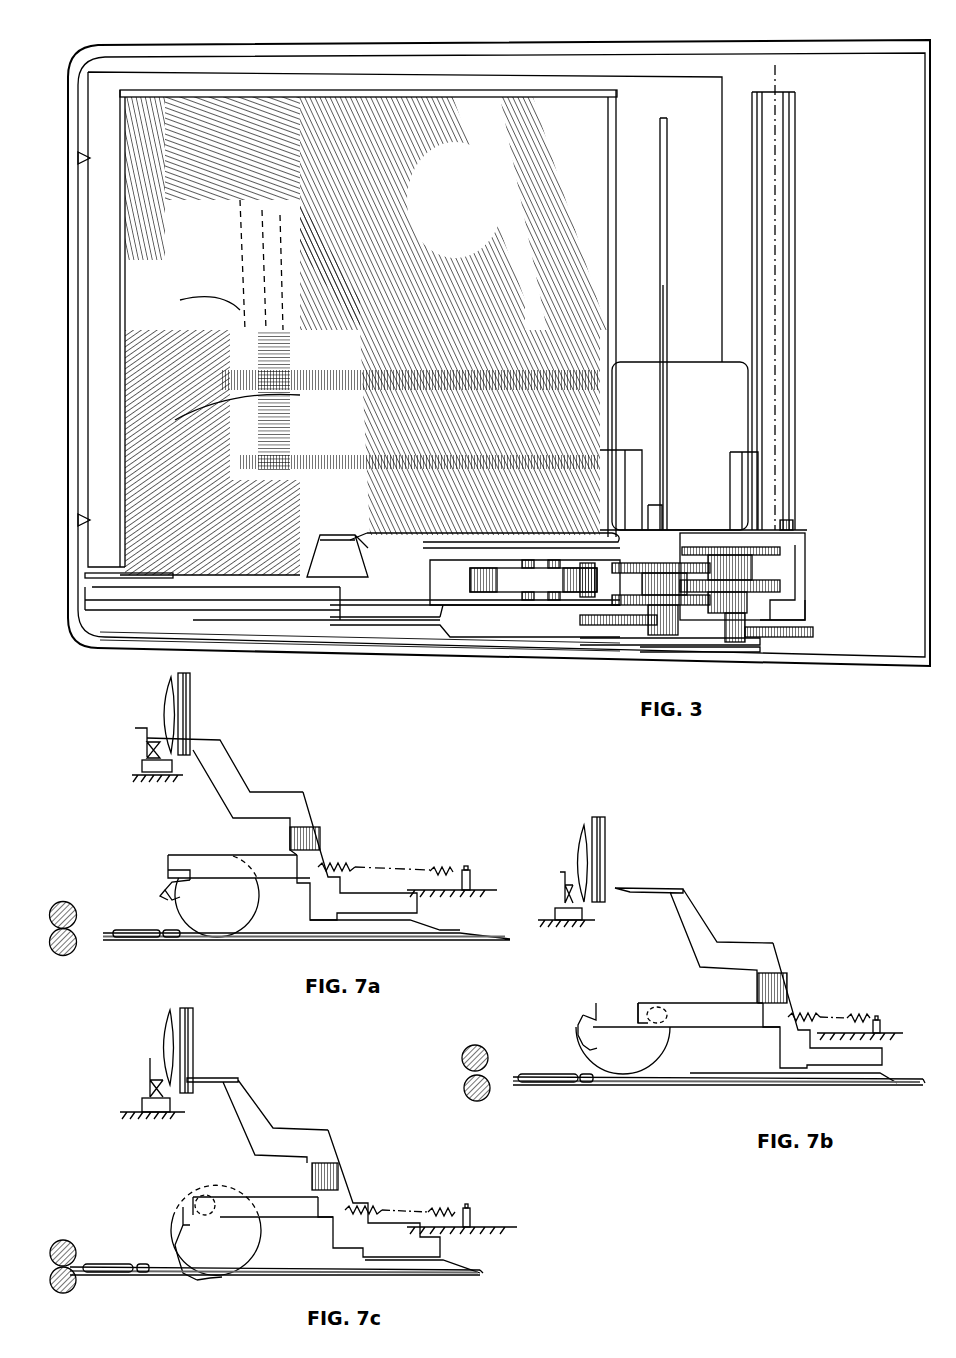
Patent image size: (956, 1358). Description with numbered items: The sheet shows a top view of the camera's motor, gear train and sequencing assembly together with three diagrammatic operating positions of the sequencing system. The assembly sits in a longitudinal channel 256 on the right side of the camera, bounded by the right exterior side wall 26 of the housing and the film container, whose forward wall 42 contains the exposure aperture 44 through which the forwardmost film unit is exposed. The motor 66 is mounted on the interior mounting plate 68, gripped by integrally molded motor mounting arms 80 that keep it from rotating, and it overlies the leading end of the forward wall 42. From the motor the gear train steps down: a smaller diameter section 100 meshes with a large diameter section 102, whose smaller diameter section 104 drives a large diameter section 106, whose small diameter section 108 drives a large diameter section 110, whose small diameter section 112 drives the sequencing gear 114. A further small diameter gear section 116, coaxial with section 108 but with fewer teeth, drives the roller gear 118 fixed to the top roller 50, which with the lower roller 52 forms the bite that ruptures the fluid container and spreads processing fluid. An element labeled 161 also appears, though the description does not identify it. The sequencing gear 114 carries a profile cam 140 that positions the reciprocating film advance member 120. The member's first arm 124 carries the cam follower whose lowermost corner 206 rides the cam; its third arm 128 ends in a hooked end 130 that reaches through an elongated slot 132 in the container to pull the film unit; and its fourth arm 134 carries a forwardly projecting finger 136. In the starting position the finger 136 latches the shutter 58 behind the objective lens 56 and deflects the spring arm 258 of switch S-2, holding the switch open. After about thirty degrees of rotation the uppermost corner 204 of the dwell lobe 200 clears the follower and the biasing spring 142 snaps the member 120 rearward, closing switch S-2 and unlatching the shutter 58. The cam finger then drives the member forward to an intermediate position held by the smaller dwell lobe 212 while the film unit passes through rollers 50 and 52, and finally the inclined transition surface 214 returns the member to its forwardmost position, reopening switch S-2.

In FIG. 3, the side wall 26 is at (575, 44).
In FIG. 3, the forward wall 42 is at (643, 99).
In FIG. 3, the exposure aperture 44 is at (396, 313).
In FIG. 3, the top roller 50 is at (795, 178).
In FIG. 7a, the top roller 50 is at (62, 902).
In FIG. 7b, the top roller 50 is at (468, 1050).
In FIG. 7c, the top roller 50 is at (63, 1240).
In FIG. 7a, the pressure applying roller 52 is at (60, 955).
In FIG. 7b, the pressure applying roller 52 is at (470, 1098).
In FIG. 7c, the pressure applying roller 52 is at (70, 1293).
In FIG. 7a, the objective lens 56 is at (165, 705).
In FIG. 7b, the objective lens 56 is at (578, 845).
In FIG. 7c, the objective lens 56 is at (165, 1027).
In FIG. 7a, the shutter mechanism 58 is at (190, 705).
In FIG. 7b, the shutter mechanism 58 is at (605, 840).
In FIG. 7c, the shutter mechanism 58 is at (193, 1028).
In FIG. 3, the motor 66 is at (728, 368).
In FIG. 3, the interior mounting plate 68 is at (630, 548).
In FIG. 3, the motor mounting arms 80 is at (745, 470).
In FIG. 3, the smaller diameter section of gear 100 is at (755, 567).
In FIG. 3, the large diameter section of compound gear 102 is at (680, 560).
In FIG. 3, the smaller diameter section of compound gear 104 is at (645, 580).
In FIG. 3, the large diameter section of compound gear 106 is at (780, 585).
In FIG. 3, the small diameter section of compound gear 108 is at (772, 608).
In FIG. 3, the large diameter section of compound gear 110 is at (700, 620).
In FIG. 3, the small diameter section of compound gear 112 is at (660, 640).
In FIG. 3, the sequencing gear 114 is at (600, 628).
In FIG. 3, the small diameter gear section 116 is at (779, 663).
In FIG. 3, the roller gear 118 is at (805, 647).
In FIG. 7a, the film advance member 120 is at (326, 840).
In FIG. 7b, the film advance member 120 is at (801, 1002).
In FIG. 7c, the film advance member 120 is at (356, 1195).
In FIG. 7a, the first arm 124 is at (228, 862).
In FIG. 7b, the first arm 124 is at (705, 1010).
In FIG. 7c, the first arm 124 is at (273, 1200).
In FIG. 7b, the third arm 128 is at (890, 1073).
In FIG. 3, the hooked end 130 is at (88, 590).
In FIG. 7a, the hooked end 130 is at (463, 933).
In FIG. 7b, the hooked end 130 is at (923, 1086).
In FIG. 7c, the hooked end 130 is at (487, 1275).
In FIG. 3, the elongated slot 132 is at (88, 573).
In FIG. 3, the fourth arm 134 is at (322, 585).
In FIG. 3, the forwardly projecting finger 136 is at (548, 532).
In FIG. 7a, the forwardly projecting finger 136 is at (205, 776).
In FIG. 7b, the forwardly projecting finger 136 is at (647, 890).
In FIG. 7c, the forwardly projecting finger 136 is at (207, 1080).
In FIG. 7a, the profile cam 140 is at (200, 893).
In FIG. 7b, the profile cam 140 is at (595, 1057).
In FIG. 7c, the profile cam 140 is at (223, 1277).
In FIG. 7a, the biasing spring 142 is at (448, 867).
In FIG. 7b, the biasing spring 142 is at (865, 1018).
In FIG. 7c, the biasing spring 142 is at (443, 1203).
In FIG. 3, the shutter drum 161 is at (482, 580).
In FIG. 7a, the dwell lobe 200 is at (167, 883).
In FIG. 7b, the dwell lobe 200 is at (578, 1030).
In FIG. 7c, the dwell lobe 200 is at (183, 1273).
In FIG. 7b, the uppermost corner of dwell lobe 204 is at (585, 1017).
In FIG. 7c, the uppermost corner of dwell lobe 204 is at (178, 1257).
In FIG. 7a, the lowermost corner of cam follower surface 206 is at (168, 875).
In FIG. 7b, the lowermost corner of cam follower surface 206 is at (635, 1018).
In FIG. 7c, the lowermost corner of cam follower surface 206 is at (183, 1207).
In FIG. 7a, the dwell lobe 212 is at (258, 898).
In FIG. 7b, the dwell lobe 212 is at (673, 1050).
In FIG. 7c, the dwell lobe 212 is at (260, 1243).
In FIG. 7a, the inclined transition surface 214 is at (168, 892).
In FIG. 7b, the inclined transition surface 214 is at (578, 1047).
In FIG. 7c, the inclined transition surface 214 is at (197, 1282).
In FIG. 3, the longitudinal channel 256 is at (378, 640).
In FIG. 7a, the spring arm 258 is at (135, 728).
In FIG. 7b, the spring arm 258 is at (560, 875).
In FIG. 7c, the spring arm 258 is at (150, 1058).
In FIG. 7a, the switch S-2 is at (142, 765).
In FIG. 7b, the switch S-2 is at (560, 908).
In FIG. 7c, the switch S-2 is at (142, 1105).